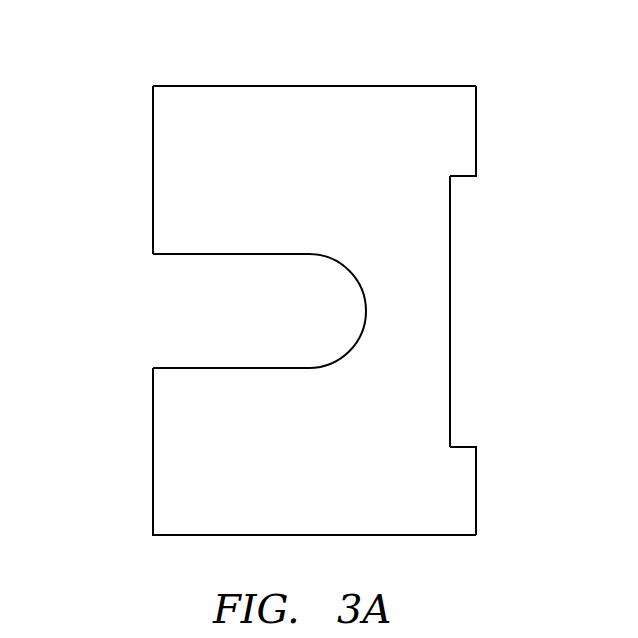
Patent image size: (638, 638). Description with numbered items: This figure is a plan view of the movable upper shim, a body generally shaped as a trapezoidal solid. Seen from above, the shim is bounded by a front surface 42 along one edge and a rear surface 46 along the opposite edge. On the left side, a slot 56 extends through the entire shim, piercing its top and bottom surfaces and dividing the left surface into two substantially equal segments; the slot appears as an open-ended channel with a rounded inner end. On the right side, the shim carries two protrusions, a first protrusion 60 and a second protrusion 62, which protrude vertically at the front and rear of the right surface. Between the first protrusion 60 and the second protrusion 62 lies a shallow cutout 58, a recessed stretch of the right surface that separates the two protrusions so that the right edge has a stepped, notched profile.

The front surface 42 is at (443, 535).
The rear surface 46 is at (433, 86).
The second protrusion 62 is at (476, 133).
The shallow cutout 58 is at (450, 280).
The first protrusion 60 is at (476, 493).
The slot 56 is at (168, 330).